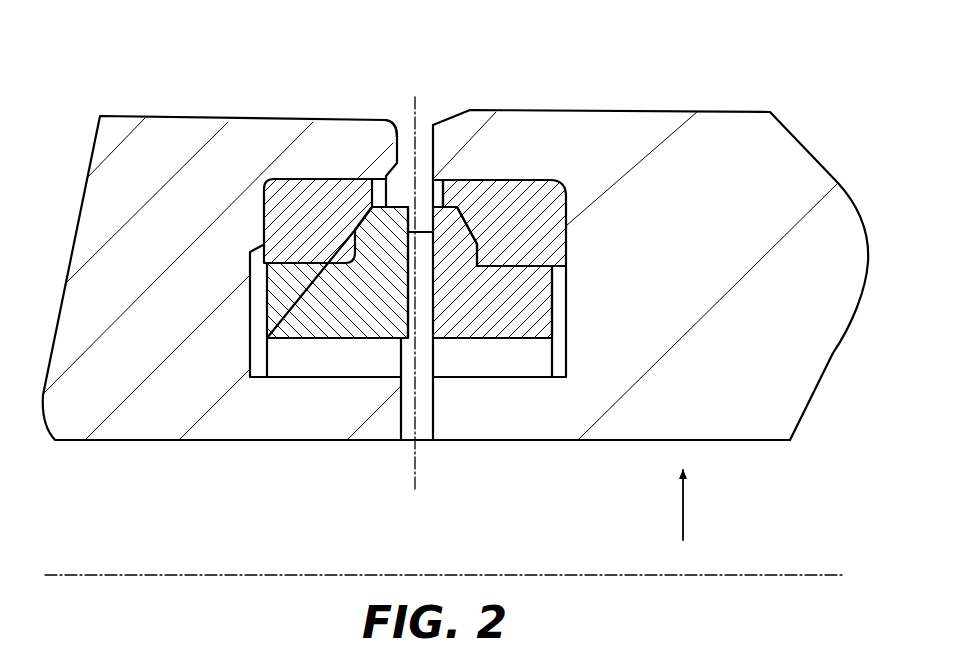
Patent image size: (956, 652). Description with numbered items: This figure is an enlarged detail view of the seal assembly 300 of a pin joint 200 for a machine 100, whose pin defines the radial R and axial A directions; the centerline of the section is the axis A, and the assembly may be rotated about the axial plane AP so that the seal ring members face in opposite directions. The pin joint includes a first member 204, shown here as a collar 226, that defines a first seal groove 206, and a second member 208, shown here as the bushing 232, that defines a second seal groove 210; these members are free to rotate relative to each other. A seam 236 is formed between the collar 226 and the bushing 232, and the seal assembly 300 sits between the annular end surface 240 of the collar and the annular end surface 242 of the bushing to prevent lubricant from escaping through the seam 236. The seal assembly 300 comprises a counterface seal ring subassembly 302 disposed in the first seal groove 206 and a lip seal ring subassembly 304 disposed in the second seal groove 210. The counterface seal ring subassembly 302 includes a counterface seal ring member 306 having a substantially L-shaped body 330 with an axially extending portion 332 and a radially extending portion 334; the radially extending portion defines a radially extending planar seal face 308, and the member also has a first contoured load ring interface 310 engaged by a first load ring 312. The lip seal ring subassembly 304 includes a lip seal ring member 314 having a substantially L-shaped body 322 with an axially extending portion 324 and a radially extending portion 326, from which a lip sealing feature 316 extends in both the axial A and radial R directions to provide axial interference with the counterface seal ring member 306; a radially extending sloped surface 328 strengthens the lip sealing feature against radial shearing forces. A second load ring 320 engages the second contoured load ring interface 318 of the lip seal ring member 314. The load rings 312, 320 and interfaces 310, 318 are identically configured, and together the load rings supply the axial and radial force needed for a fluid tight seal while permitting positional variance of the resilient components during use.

The machine 100 is at (446, 296).
The pin joint 200 is at (668, 46).
The first member 204 is at (660, 275).
The collar 226 is at (823, 222).
The first seal groove 206 is at (567, 302).
The second member 208 is at (416, 251).
The bushing 232 is at (168, 150).
The second seal groove 210 is at (264, 276).
The seam 236 is at (386, 292).
The annular end surface of the collar 240 is at (435, 150).
The annular end surface of the bushing 242 is at (390, 137).
The seal assembly 300 is at (484, 160).
The counterface seal ring subassembly 302 is at (432, 213).
The lip seal ring subassembly 304 is at (393, 214).
The counterface seal ring member 306 is at (423, 343).
The substantially L-shaped body of the counterface seal ring member 330 is at (423, 343).
The radially extending planar seal face 308 is at (433, 248).
The first contoured load ring interface 310 is at (432, 213).
The first load ring 312 is at (432, 213).
The lip seal ring member 314 is at (335, 350).
The substantially L-shaped body of the lip seal ring member 322 is at (335, 350).
The lip sealing feature 316 is at (447, 357).
The second contoured load ring interface 318 is at (556, 171).
The second load ring 320 is at (393, 214).
The axially extending portion of the lip seal ring body 324 is at (287, 323).
The radially extending portion of the lip seal ring body 326 is at (308, 168).
The radially extending sloped surface 328 is at (447, 357).
The axially extending portion of the counterface seal ring body 332 is at (458, 322).
The radially extending portion of the counterface seal ring body 334 is at (432, 213).
The axial plane AP is at (408, 143).
The radial direction R is at (683, 540).
The axis A is at (785, 575).